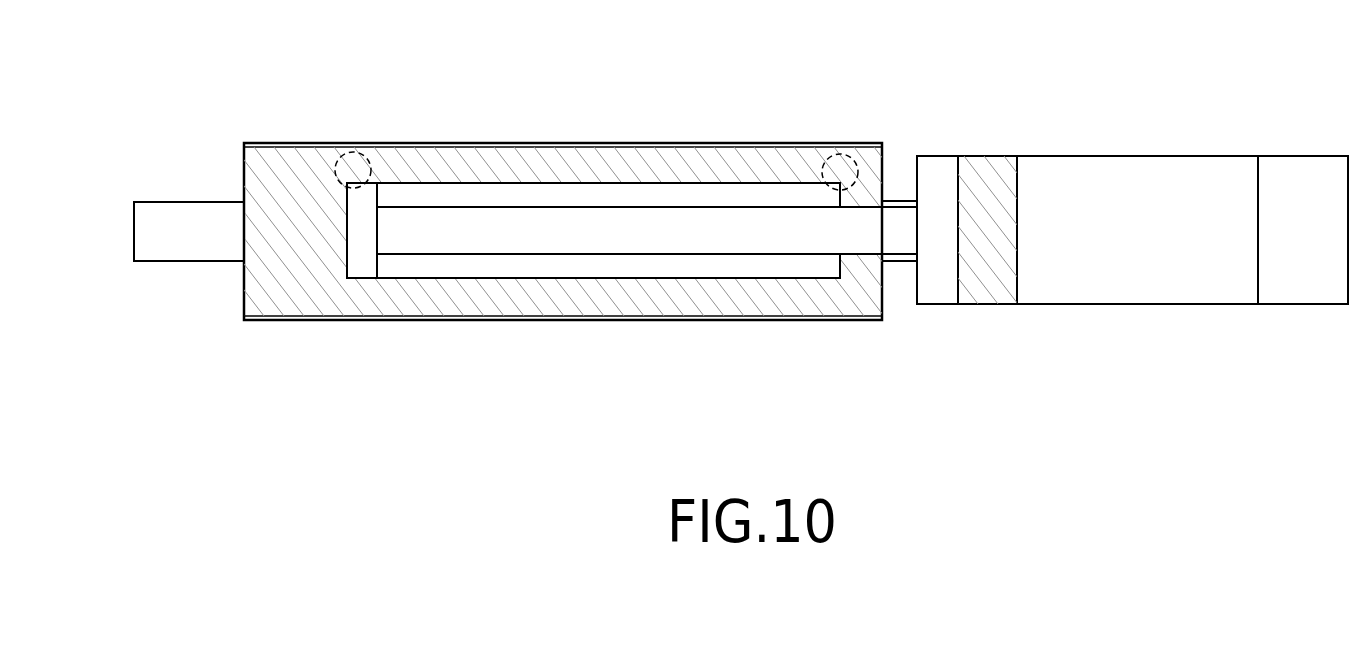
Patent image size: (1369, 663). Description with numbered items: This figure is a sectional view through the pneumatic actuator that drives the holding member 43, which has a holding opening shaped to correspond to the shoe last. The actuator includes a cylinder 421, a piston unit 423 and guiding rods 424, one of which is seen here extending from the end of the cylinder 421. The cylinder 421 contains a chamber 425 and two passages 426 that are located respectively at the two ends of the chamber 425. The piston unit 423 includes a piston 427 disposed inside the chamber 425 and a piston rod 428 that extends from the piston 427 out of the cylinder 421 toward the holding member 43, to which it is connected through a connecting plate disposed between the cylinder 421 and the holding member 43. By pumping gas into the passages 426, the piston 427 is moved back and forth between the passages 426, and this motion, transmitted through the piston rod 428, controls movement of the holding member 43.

The cylinder 421 is at (630, 145).
The piston unit 423 is at (565, 240).
The guiding rod 424 is at (183, 208).
The chamber 425 is at (473, 190).
The passage 426 is at (342, 158).
The piston 427 is at (357, 243).
The piston rod 428 is at (647, 302).
The holding member 43 is at (1126, 167).